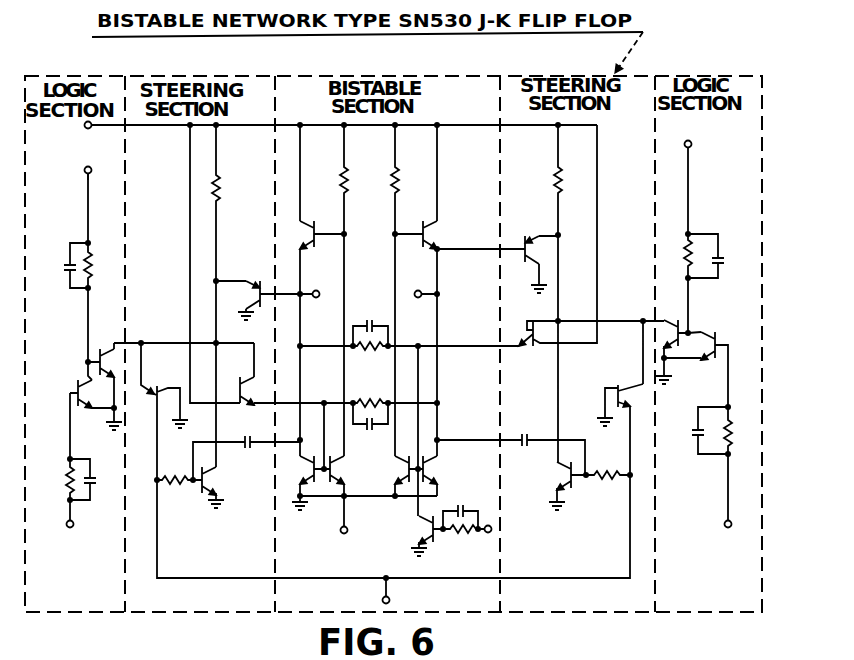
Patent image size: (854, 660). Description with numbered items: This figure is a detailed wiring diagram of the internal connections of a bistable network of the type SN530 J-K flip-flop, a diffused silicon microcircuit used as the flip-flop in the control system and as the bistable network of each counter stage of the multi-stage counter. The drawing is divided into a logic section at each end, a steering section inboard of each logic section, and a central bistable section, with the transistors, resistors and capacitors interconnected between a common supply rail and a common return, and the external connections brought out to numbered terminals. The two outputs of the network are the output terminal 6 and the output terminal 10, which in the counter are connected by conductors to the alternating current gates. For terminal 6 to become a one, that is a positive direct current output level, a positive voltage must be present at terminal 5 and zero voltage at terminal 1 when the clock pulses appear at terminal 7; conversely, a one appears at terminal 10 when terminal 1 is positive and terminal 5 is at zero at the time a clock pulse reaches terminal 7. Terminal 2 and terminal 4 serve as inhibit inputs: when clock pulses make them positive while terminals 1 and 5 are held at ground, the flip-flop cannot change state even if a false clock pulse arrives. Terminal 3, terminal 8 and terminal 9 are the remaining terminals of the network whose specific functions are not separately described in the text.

The terminal 1 is at (74, 531).
The terminal 2 is at (85, 171).
The terminal 3 is at (85, 128).
The terminal 4 is at (691, 147).
The terminal 5 is at (725, 528).
The output terminal 6 is at (317, 290).
The terminal 7 is at (392, 599).
The terminal 8 is at (341, 534).
The terminal 9 is at (486, 533).
The output terminal 10 is at (417, 290).